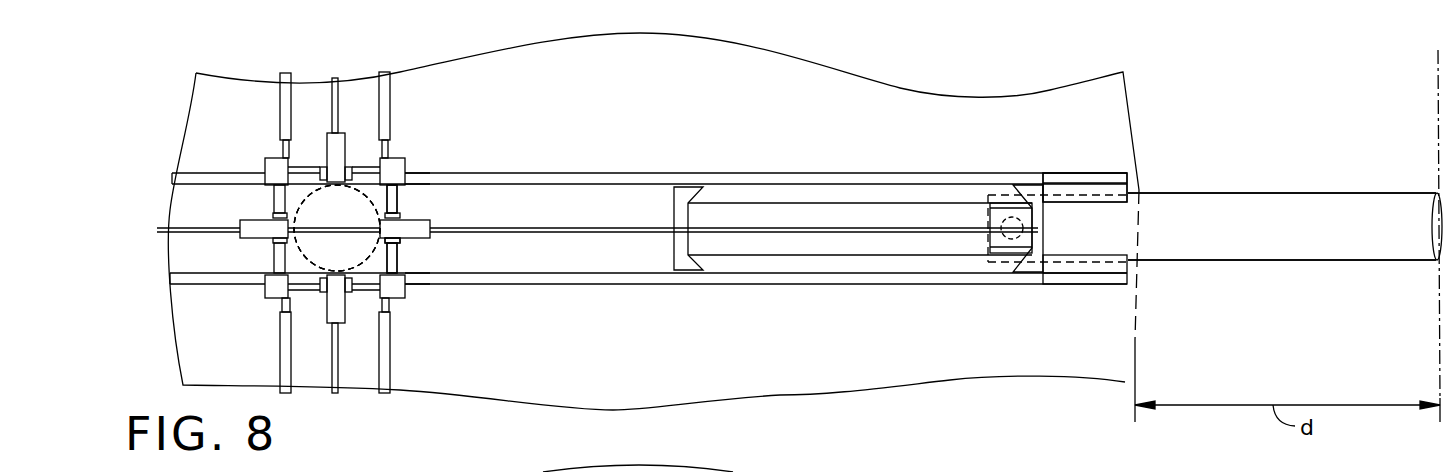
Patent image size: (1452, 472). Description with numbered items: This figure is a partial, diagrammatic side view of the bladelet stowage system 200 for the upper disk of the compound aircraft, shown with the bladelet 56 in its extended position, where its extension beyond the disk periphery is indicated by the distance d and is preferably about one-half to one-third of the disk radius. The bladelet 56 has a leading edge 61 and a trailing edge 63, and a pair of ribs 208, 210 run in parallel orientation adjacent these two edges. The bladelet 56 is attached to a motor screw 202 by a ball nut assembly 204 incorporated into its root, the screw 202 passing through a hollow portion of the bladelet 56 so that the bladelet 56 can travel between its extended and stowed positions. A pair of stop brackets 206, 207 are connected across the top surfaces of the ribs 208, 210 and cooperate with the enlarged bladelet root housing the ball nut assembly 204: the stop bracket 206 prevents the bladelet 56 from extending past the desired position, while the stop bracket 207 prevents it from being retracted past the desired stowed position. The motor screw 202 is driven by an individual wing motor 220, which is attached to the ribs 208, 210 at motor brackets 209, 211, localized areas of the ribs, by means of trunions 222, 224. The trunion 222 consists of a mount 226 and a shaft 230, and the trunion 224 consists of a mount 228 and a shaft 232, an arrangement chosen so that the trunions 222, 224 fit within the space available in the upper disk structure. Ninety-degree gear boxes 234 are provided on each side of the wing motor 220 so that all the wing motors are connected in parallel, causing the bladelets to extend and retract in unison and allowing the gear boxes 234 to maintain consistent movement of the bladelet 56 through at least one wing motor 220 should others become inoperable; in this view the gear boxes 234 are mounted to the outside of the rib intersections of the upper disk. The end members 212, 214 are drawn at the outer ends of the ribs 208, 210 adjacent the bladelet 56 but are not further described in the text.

The bladelet stowage system 200 is at (542, 90).
The motor screw 202 is at (560, 233).
The ball nut assembly 204 is at (1036, 212).
The stop bracket 206 is at (1030, 192).
The stop bracket 207 is at (700, 190).
The rib 208 is at (598, 175).
The motor bracket 209 is at (415, 176).
The rib 210 is at (612, 285).
The motor bracket 211 is at (417, 283).
The upper end member 212 is at (1128, 187).
The lower end member 214 is at (1128, 268).
The wing motor 220 is at (343, 130).
The trunion 222 is at (405, 197).
The trunion 224 is at (405, 263).
The mount 226 is at (378, 223).
The mount 228 is at (382, 240).
The shaft 230 is at (378, 212).
The shaft 232 is at (400, 252).
The 90° gear box 234 is at (280, 150).
The bladelet 56 is at (1324, 241).
The leading edge 61 is at (1297, 193).
The trailing edge 63 is at (1332, 261).